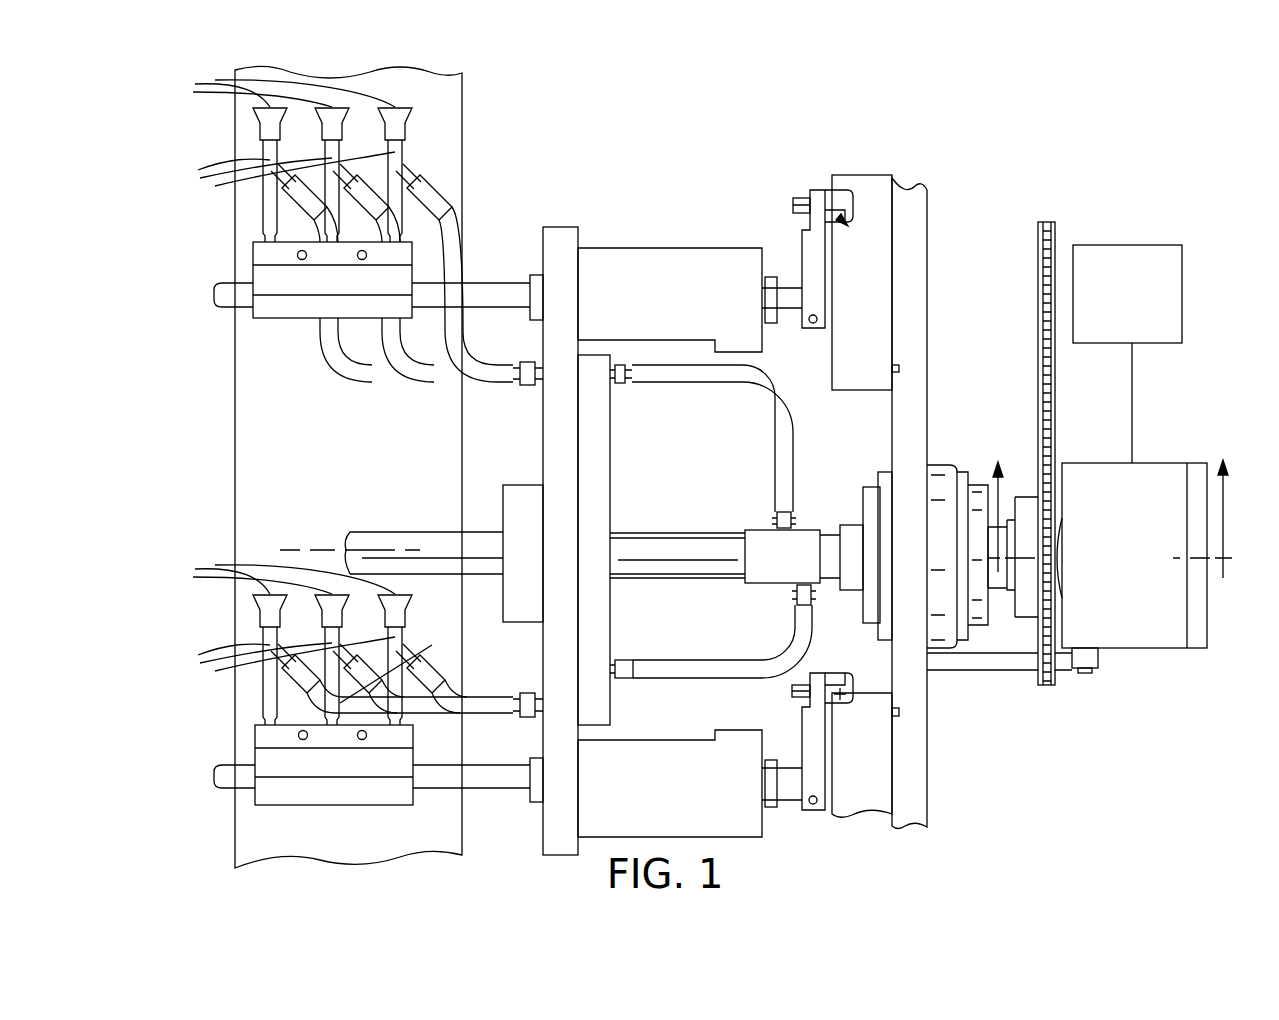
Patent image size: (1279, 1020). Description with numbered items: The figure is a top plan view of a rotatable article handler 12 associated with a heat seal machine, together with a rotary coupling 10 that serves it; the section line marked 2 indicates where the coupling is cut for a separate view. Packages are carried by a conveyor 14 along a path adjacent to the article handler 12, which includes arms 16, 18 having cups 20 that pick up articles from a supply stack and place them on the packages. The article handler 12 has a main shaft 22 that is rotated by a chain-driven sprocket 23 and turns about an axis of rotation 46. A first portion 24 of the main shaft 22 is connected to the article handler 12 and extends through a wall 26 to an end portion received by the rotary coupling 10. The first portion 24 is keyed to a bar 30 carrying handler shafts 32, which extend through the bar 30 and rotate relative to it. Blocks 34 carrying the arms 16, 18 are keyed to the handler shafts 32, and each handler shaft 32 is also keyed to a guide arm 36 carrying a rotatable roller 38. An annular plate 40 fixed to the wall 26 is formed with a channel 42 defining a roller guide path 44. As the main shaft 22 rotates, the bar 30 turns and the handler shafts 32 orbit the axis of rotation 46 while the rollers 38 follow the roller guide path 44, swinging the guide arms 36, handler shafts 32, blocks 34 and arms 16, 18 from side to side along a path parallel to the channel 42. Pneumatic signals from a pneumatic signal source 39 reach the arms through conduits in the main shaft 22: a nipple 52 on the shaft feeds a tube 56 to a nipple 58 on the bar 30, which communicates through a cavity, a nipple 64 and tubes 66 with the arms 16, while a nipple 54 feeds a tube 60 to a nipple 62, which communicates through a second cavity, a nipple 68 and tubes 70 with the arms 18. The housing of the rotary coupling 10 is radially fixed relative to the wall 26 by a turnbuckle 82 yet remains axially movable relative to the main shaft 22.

The rotary coupling 10 is at (1159, 658).
The article handler 12 is at (480, 876).
The conveyor 14 is at (462, 165).
The arms 16 is at (287, 178).
The arms 18 is at (290, 662).
The cups 20 is at (284, 321).
The main shaft 22 is at (652, 553).
The chain-driven sprocket 23 is at (1036, 645).
The first portion 24 is at (775, 584).
The wall 26 is at (912, 316).
The bar 30 is at (602, 488).
The handler shafts 32 is at (502, 284).
The blocks 34 is at (278, 320).
The guide arm 36 is at (805, 252).
The roller 38 is at (830, 200).
The pneumatic signal source 39 is at (1127, 245).
The annular plate 40 is at (878, 186).
The channel 42 is at (845, 195).
The roller guide path 44 is at (846, 225).
The axis of rotation 46 is at (328, 540).
The nipple 52 is at (794, 510).
The nipple 54 is at (820, 555).
The tube 56 is at (764, 393).
The nipple 58 is at (626, 380).
The tube 60 is at (762, 660).
The nipple 62 is at (628, 658).
The nipple 64 is at (528, 386).
The tubes 66 is at (374, 384).
The nipple 68 is at (527, 695).
The tubes 70 is at (455, 700).
The turnbuckle 82 is at (970, 672).
The section line 2- 2 is at (1109, 500).